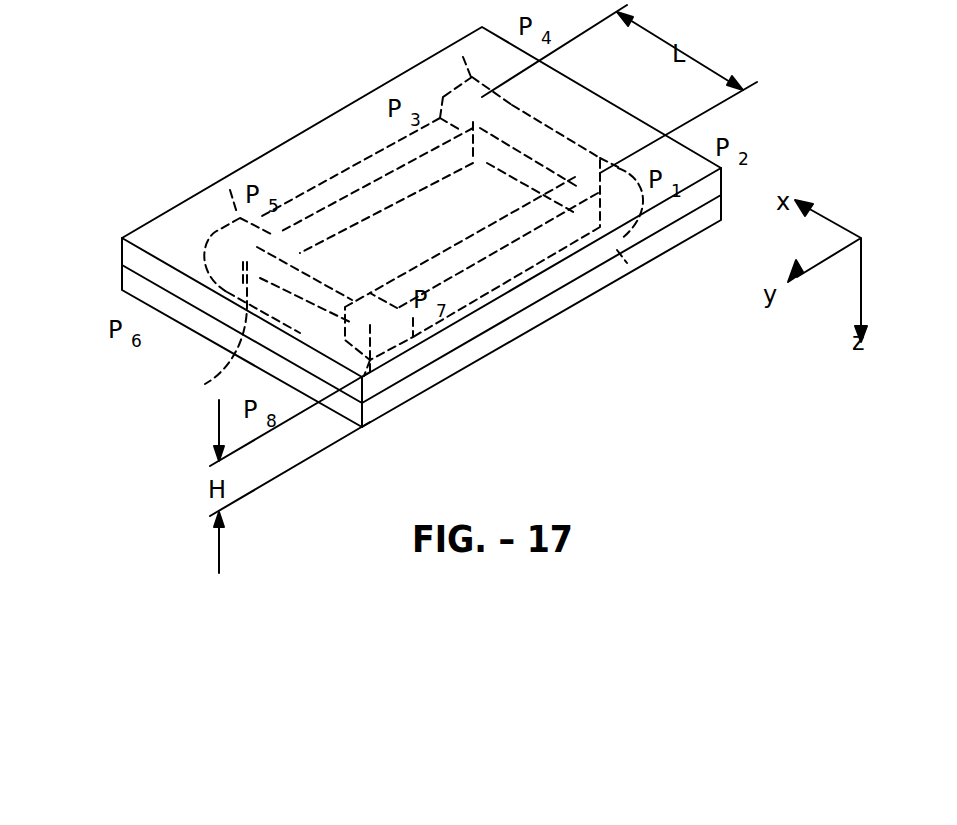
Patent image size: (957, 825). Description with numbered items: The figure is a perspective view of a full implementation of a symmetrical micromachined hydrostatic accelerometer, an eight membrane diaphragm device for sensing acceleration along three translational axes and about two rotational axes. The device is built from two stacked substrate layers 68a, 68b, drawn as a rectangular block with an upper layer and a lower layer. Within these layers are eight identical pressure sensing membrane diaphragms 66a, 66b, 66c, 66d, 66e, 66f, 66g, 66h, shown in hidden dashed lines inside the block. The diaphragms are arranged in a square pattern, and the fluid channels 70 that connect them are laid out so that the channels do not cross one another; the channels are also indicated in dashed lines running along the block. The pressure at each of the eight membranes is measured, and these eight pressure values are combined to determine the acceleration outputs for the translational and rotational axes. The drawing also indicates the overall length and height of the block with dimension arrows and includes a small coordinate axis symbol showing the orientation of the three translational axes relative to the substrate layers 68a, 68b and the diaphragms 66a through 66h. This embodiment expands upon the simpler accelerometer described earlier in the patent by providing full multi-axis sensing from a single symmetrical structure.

The fluid channels 70 is at (320, 119).
The substrate layer 68a is at (122, 252).
The substrate layer 68b is at (122, 278).
The pressure sensing membrane diaphragm 66a is at (375, 185).
The pressure sensing membrane diaphragm 66b is at (633, 268).
The pressure sensing membrane diaphragm 66c is at (452, 40).
The pressure sensing membrane diaphragm 66d is at (512, 105).
The pressure sensing membrane diaphragm 66e is at (213, 170).
The pressure sensing membrane diaphragm 66f is at (215, 376).
The pressure sensing membrane diaphragm 66g is at (362, 298).
The pressure sensing membrane diaphragm 66h is at (378, 409).